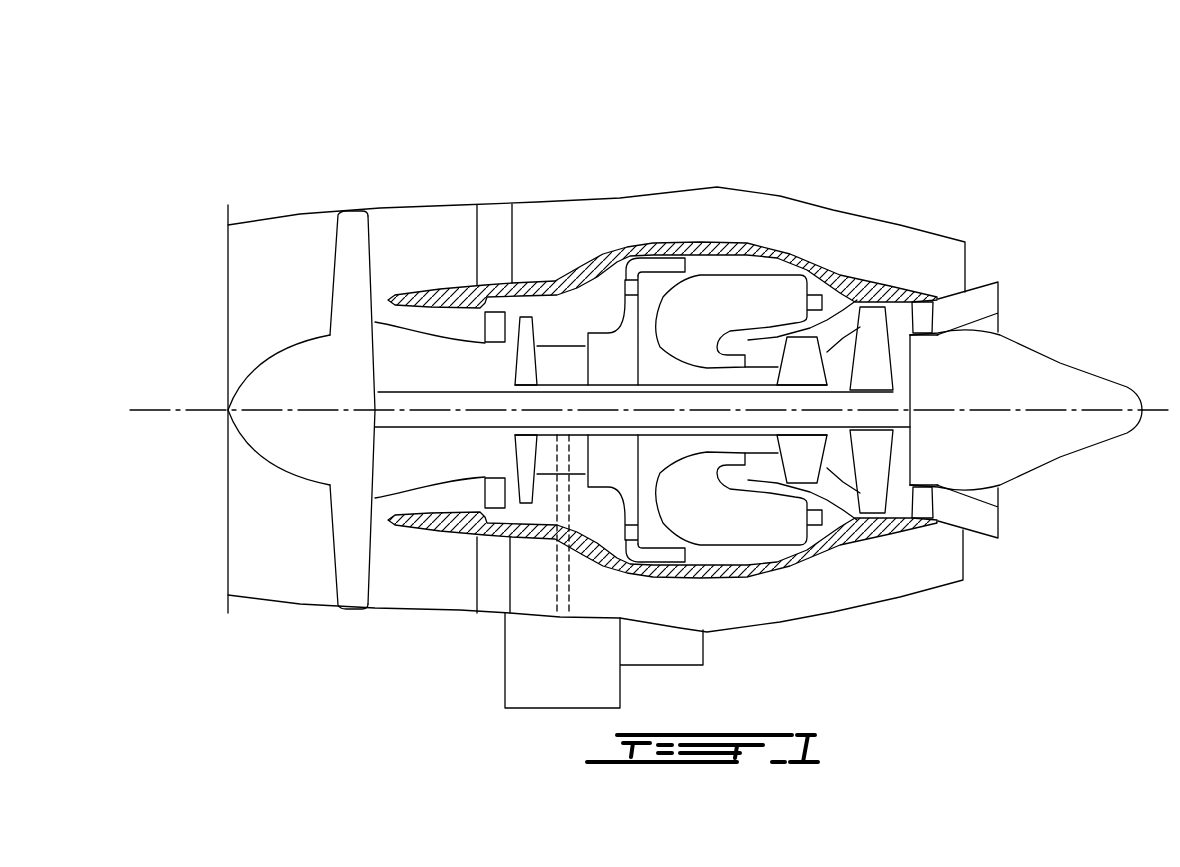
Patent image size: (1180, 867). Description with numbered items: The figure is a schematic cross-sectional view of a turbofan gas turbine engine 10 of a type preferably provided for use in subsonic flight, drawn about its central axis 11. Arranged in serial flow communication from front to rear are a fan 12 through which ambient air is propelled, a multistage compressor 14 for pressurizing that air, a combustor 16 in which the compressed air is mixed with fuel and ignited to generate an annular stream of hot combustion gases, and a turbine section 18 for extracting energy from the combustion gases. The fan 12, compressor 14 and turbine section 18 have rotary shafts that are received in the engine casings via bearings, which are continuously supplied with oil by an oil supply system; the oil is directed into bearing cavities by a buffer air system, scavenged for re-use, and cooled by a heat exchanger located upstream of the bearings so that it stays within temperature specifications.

The turbofan gas turbine engine 10 is at (651, 375).
The central longitudinal axis 11 is at (1172, 400).
The fan 12 is at (347, 535).
The multistage compressor 14 is at (555, 327).
The combustor 16 is at (732, 295).
The turbine section 18 is at (840, 463).